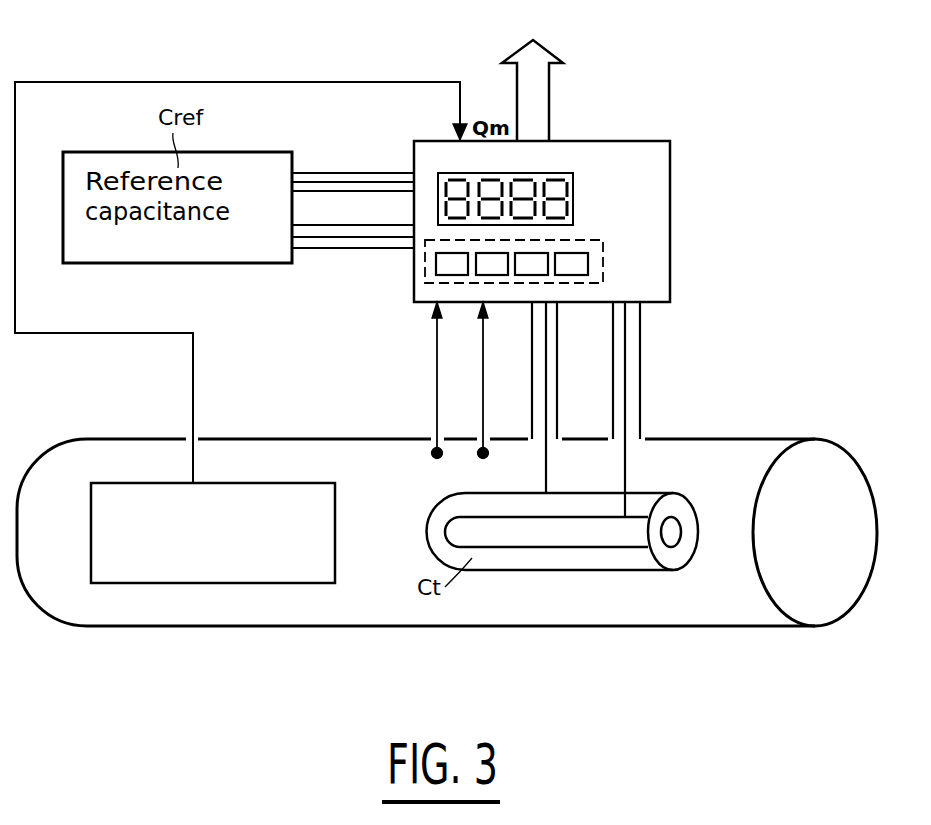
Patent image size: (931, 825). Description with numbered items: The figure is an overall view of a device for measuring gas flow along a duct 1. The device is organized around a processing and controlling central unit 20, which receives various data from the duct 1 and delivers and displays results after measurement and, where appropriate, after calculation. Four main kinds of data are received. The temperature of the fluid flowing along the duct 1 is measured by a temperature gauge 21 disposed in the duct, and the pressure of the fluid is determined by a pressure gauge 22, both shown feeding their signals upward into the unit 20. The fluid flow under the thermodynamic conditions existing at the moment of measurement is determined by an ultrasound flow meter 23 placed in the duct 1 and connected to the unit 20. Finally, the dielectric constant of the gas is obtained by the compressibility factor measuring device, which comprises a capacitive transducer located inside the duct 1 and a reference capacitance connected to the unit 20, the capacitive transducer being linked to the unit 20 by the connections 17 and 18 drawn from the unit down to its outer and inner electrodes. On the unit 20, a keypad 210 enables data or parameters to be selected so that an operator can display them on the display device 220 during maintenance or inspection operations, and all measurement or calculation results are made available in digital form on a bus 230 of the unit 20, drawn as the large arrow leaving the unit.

The duct 1 is at (142, 628).
The connection to outer electrode of measuring capacitor 17 is at (546, 443).
The connection to inner electrode of measuring capacitor 18 is at (625, 443).
The processing and controlling central unit 20 is at (662, 268).
The temperature gauge 21 is at (432, 453).
The pressure gauge 22 is at (488, 457).
The ultrasound flow meter 23 is at (335, 525).
The keypad 210 is at (598, 247).
The display device 220 is at (576, 190).
The bus 230 is at (538, 100).